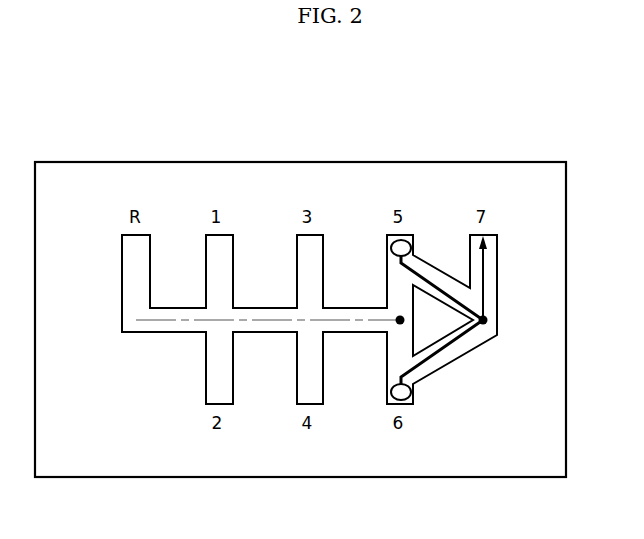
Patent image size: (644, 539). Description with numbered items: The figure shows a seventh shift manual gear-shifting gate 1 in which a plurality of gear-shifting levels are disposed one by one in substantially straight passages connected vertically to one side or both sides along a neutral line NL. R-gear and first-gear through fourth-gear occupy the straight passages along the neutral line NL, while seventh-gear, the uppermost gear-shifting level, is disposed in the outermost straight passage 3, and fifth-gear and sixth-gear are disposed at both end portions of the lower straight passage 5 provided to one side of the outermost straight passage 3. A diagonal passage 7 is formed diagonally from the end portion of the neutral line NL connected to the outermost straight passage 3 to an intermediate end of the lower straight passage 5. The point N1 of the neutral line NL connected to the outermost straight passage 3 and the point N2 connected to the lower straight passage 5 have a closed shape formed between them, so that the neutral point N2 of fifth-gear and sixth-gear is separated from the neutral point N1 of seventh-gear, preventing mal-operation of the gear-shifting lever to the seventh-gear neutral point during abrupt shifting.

The manual gear-shifting gate 1 is at (463, 145).
The neutral line NL is at (268, 320).
The lower straight passage 5 is at (390, 355).
The diagonal passage 7 is at (452, 288).
The outermost straight passage 3 is at (485, 276).
The neutral point N1 is at (486, 323).
The neutral point N2 is at (402, 323).